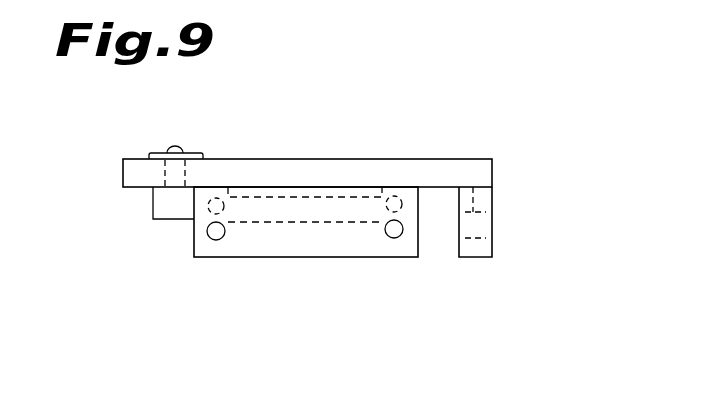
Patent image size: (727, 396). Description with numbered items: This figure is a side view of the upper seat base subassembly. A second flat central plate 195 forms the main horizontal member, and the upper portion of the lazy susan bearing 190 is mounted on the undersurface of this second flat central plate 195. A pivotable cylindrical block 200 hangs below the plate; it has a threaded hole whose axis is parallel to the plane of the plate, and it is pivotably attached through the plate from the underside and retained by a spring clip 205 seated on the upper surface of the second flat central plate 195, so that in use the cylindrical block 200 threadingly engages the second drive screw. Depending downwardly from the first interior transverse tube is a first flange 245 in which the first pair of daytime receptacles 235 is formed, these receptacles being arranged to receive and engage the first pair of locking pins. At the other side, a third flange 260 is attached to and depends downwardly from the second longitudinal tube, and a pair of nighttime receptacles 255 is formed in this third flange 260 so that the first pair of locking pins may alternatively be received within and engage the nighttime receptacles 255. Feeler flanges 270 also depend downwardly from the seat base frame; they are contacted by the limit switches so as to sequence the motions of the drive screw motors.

The lazy susan bearing 190 is at (338, 186).
The second flat central plate 195 is at (473, 158).
The pivotable cylindrical block 200 is at (172, 220).
The spring clip 205 is at (196, 152).
The first pair of daytime receptacles 235 is at (394, 238).
The first flange 245 is at (354, 236).
The nighttime receptacles 255 is at (492, 229).
The third flange 260 is at (493, 258).
The feeler flanges 270 is at (492, 203).